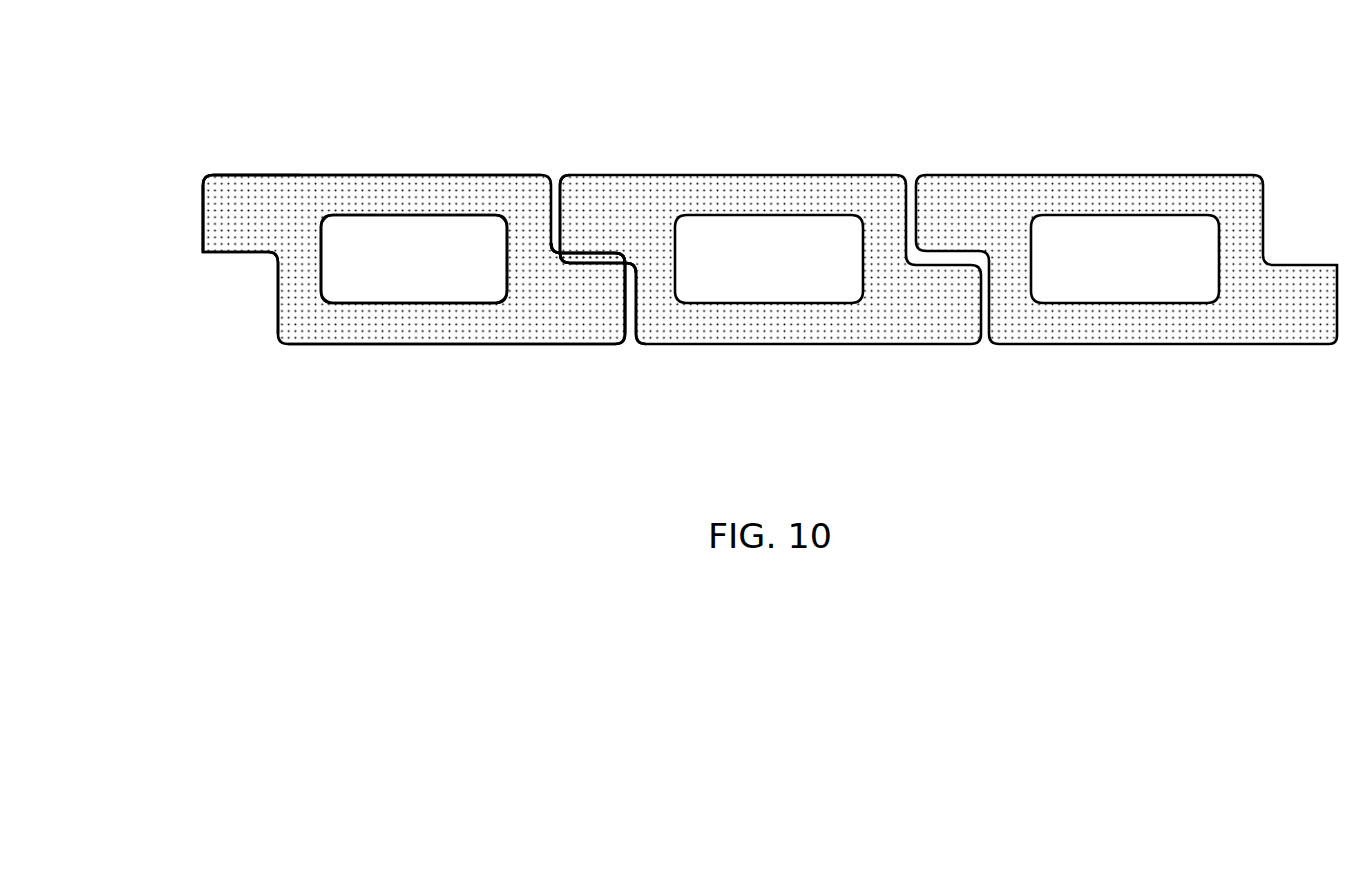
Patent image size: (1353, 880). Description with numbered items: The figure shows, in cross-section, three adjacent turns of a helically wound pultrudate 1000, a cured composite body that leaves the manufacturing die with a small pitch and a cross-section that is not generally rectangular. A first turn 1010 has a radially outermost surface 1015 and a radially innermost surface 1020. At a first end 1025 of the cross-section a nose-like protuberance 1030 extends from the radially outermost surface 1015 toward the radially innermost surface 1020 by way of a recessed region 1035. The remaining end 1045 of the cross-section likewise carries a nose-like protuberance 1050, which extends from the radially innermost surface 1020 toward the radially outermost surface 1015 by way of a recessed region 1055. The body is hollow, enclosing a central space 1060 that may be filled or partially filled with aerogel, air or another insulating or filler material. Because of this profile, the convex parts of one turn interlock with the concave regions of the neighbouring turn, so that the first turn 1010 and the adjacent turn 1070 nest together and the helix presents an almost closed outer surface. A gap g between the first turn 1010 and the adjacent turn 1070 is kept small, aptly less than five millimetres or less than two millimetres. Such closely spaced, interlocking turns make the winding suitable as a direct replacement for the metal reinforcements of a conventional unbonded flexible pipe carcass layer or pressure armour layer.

The pultrudate 1000 is at (700, 246).
The first turn 1010 is at (344, 279).
The radially outermost surface 1015 is at (407, 172).
The radially innermost surface 1020 is at (500, 347).
The first end 1025 is at (188, 295).
The nose-like protuberance 1030 is at (223, 195).
The recessed region 1035 is at (277, 300).
The remaining end 1045 is at (627, 365).
The nose-like protuberance 1050 is at (593, 325).
The recessed region 1055 is at (555, 200).
The central space 1060 is at (442, 272).
The adjacent turn 1070 is at (768, 289).
The gap g is at (602, 262).